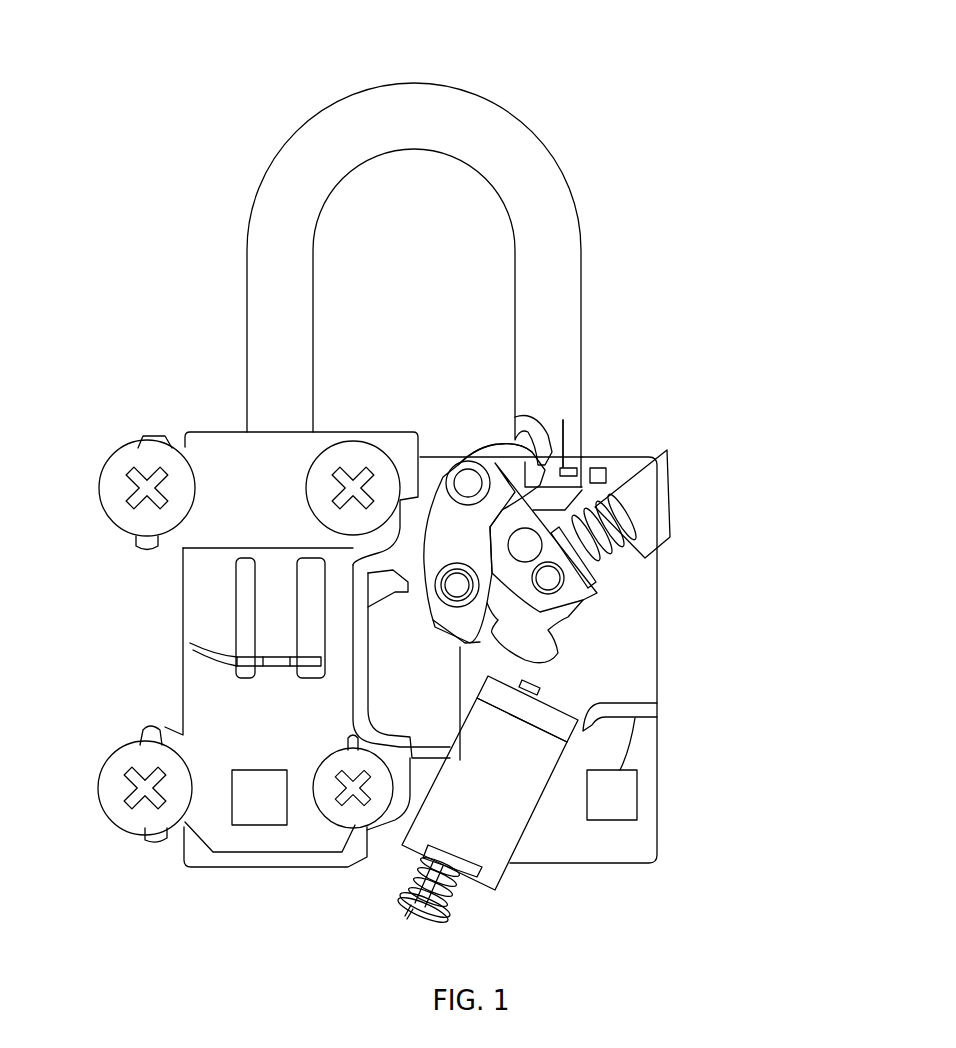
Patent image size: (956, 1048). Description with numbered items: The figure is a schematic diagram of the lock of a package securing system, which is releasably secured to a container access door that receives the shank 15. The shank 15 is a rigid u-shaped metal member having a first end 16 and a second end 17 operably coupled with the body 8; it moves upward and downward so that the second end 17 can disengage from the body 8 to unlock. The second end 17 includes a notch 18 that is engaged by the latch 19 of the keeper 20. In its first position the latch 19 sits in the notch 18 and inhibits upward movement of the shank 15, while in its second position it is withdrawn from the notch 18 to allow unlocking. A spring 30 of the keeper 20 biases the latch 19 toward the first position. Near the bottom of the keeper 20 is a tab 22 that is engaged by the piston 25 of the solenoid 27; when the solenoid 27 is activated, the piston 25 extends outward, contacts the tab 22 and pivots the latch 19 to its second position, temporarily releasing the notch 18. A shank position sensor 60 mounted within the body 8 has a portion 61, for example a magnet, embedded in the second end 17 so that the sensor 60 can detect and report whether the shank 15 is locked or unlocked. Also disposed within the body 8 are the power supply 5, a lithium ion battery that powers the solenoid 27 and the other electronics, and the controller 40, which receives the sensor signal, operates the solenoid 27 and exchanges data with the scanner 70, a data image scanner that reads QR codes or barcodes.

The power supply 5 is at (258, 803).
The body 8 is at (198, 691).
The shank 15 is at (362, 117).
The first end 16 is at (267, 417).
The second end 17 is at (578, 444).
The notch 18 is at (504, 441).
The latch 19 is at (493, 450).
The keeper 20 is at (450, 535).
The tab 22 is at (545, 627).
The piston 25 is at (547, 688).
The solenoid 27 is at (493, 820).
The spring 30 is at (630, 473).
The controller 40 is at (620, 802).
The shank position sensor 60 is at (607, 470).
The portion 61 is at (563, 465).
The scanner 70 is at (233, 610).